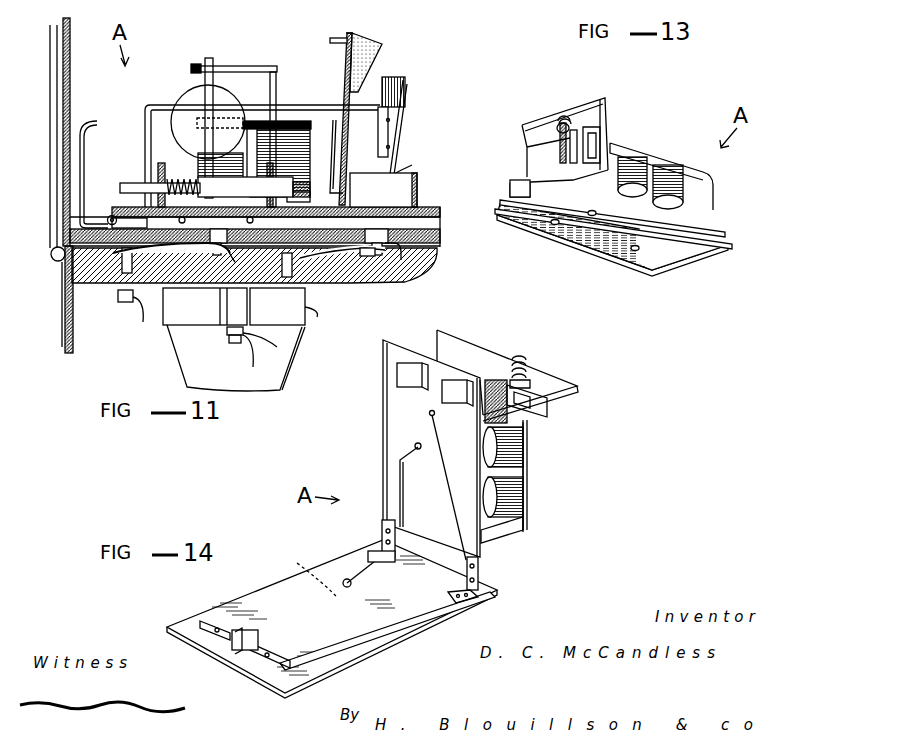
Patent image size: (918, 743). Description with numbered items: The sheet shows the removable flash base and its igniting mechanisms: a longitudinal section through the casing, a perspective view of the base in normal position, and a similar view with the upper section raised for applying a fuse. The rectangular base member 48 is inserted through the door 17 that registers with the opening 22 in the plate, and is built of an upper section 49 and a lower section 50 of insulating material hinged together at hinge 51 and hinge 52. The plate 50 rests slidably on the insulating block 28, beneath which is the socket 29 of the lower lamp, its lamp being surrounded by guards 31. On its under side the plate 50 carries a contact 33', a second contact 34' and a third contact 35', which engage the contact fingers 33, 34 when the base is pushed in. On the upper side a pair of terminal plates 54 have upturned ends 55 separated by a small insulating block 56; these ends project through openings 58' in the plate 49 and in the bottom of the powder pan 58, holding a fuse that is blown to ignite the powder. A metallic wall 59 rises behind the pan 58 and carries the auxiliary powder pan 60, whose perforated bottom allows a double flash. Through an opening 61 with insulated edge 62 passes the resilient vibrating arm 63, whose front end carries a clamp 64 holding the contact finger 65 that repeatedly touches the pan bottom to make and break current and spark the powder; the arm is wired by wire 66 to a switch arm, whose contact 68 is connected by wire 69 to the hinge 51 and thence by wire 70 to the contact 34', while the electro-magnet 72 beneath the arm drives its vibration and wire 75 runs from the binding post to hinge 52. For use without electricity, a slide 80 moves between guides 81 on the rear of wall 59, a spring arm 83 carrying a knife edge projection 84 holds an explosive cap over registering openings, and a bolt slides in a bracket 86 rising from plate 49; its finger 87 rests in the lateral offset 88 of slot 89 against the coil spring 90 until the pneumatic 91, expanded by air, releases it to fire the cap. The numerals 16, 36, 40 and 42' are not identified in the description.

In FIG. 14, the rail 16 is at (367, 627).
In FIG. 11, the door 17 is at (63, 103).
In FIG. 11, the opening 22 is at (67, 172).
In FIG. 11, the insulating block 28 is at (423, 265).
In FIG. 11, the socket 29 is at (287, 380).
In FIG. 11, the guards 31 is at (360, 260).
In FIG. 11, the contact finger 33 is at (343, 284).
In FIG. 11, the contact 33' is at (405, 277).
In FIG. 13, the contact 33' is at (536, 246).
In FIG. 14, the contact 33' is at (189, 661).
In FIG. 11, the contact finger 34 is at (209, 284).
In FIG. 11, the second contact 34' is at (210, 300).
In FIG. 13, the second contact 34' is at (619, 272).
In FIG. 14, the second contact 34' is at (302, 576).
In FIG. 13, the third contact 35' is at (578, 246).
In FIG. 14, the third contact 35' is at (230, 700).
In FIG. 11, the wire 36 is at (317, 317).
In FIG. 11, the hook bracket 40 is at (153, 310).
In FIG. 11, the terminal nut 42' is at (237, 350).
In FIG. 11, the base member 48 is at (449, 233).
In FIG. 13, the base member 48 is at (738, 232).
In FIG. 14, the base member 48 is at (508, 601).
In FIG. 11, the upper section 49 is at (439, 213).
In FIG. 13, the upper section 49 is at (722, 232).
In FIG. 14, the upper section 49 is at (383, 440).
In FIG. 11, the lower section 50 is at (440, 247).
In FIG. 13, the lower section 50 is at (713, 248).
In FIG. 14, the lower section 50 is at (253, 600).
In FIG. 14, the hinge 51 is at (380, 533).
In FIG. 11, the hinge 52 is at (107, 220).
In FIG. 14, the hinge 52 is at (480, 578).
In FIG. 14, the terminal plates 54 is at (205, 630).
In FIG. 14, the upturned ends 55 is at (248, 632).
In FIG. 14, the block 56 is at (238, 652).
In FIG. 11, the pan 58 is at (402, 186).
In FIG. 13, the pan 58 is at (511, 180).
In FIG. 14, the pan 58 is at (452, 373).
In FIG. 14, the openings 58' is at (459, 357).
In FIG. 11, the metallic wall 59 is at (387, 68).
In FIG. 13, the metallic wall 59 is at (607, 100).
In FIG. 14, the metallic wall 59 is at (580, 388).
In FIG. 11, the auxiliary powder pan 60 is at (365, 43).
In FIG. 13, the auxiliary powder pan 60 is at (540, 117).
In FIG. 14, the auxiliary powder pan 60 is at (542, 380).
In FIG. 13, the opening 61 is at (590, 140).
In FIG. 13, the insulation 62 is at (603, 147).
In FIG. 14, the insulation 62 is at (547, 410).
In FIG. 13, the vibrating arm 63 is at (627, 147).
In FIG. 14, the vibrating arm 63 is at (527, 430).
In FIG. 11, the clamp 64 is at (387, 133).
In FIG. 13, the clamp 64 is at (566, 143).
In FIG. 14, the clamp 64 is at (513, 353).
In FIG. 11, the contact finger 65 is at (130, 183).
In FIG. 13, the contact finger 65 is at (562, 120).
In FIG. 14, the contact finger 65 is at (497, 377).
In FIG. 11, the wire 66 is at (163, 173).
In FIG. 11, the contact 68 is at (283, 110).
In FIG. 14, the contact 68 is at (416, 443).
In FIG. 14, the wire 69 is at (400, 480).
In FIG. 14, the wire 70 is at (350, 580).
In FIG. 13, the electro-magnet 72 is at (673, 170).
In FIG. 14, the electro-magnet 72 is at (531, 486).
In FIG. 14, the wire 75 is at (443, 500).
In FIG. 11, the slide 80 is at (350, 33).
In FIG. 11, the guides 81 is at (330, 40).
In FIG. 11, the spring arm 83 is at (340, 120).
In FIG. 11, the knife edge projection 84 is at (331, 187).
In FIG. 11, the bracket 86 is at (284, 82).
In FIG. 11, the finger 87 is at (210, 58).
In FIG. 11, the lateral offset 88 is at (202, 66).
In FIG. 11, the slot 89 is at (243, 67).
In FIG. 11, the coil spring 90 is at (175, 172).
In FIG. 11, the pneumatic 91 is at (190, 98).